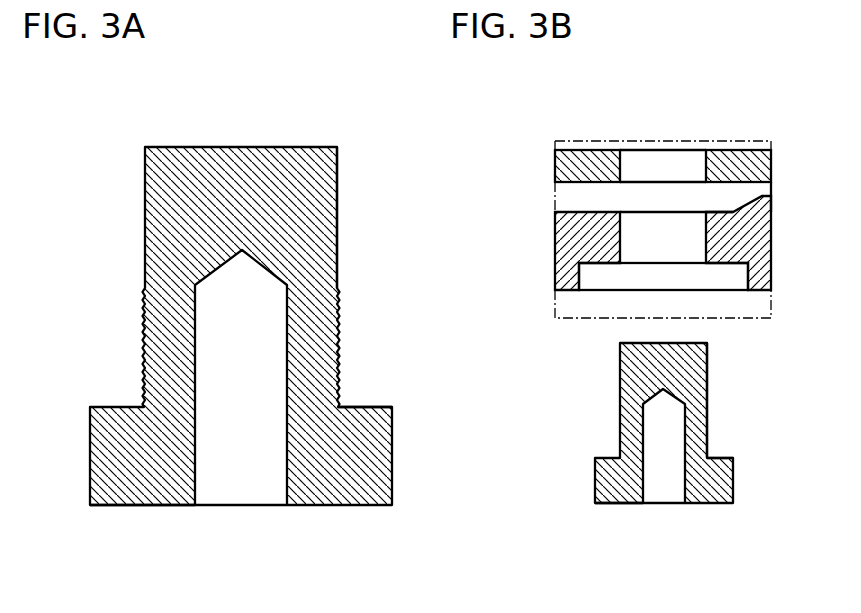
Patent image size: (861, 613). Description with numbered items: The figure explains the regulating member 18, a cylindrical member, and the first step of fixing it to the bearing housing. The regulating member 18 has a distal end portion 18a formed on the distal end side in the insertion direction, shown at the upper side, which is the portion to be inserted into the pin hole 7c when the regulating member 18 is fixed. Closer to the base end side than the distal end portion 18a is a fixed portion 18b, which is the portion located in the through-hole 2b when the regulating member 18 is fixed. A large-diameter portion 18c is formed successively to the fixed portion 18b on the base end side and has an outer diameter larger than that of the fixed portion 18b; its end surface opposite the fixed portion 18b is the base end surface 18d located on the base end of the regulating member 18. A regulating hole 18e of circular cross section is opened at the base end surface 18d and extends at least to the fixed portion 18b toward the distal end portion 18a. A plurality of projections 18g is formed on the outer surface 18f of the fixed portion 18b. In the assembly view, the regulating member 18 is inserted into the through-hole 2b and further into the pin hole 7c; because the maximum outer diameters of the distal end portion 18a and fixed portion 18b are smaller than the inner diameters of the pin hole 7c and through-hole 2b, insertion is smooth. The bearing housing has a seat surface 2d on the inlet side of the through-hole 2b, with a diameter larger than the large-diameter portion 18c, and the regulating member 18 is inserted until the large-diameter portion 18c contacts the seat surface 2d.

In FIG. 3A, the regulating member 18 is at (197, 104).
In FIG. 3B, the regulating member 18 is at (609, 388).
In FIG. 3A, the distal end portion 18a is at (338, 211).
In FIG. 3B, the distal end portion 18a is at (708, 364).
In FIG. 3A, the fixed portion 18b is at (341, 331).
In FIG. 3B, the fixed portion 18b is at (620, 428).
In FIG. 3A, the outer surface 18f is at (390, 322).
In FIG. 3B, the outer surface 18f is at (620, 428).
In FIG. 3A, the large-diameter portion 18c is at (356, 407).
In FIG. 3B, the large-diameter portion 18c is at (724, 458).
In FIG. 3A, the base end surface 18d is at (153, 505).
In FIG. 3B, the base end surface 18d is at (617, 503).
In FIG. 3A, the regulating hole 18e is at (287, 467).
In FIG. 3B, the regulating hole 18e is at (685, 462).
In FIG. 3A, the projections 18g is at (146, 337).
In FIG. 3B, the through-hole 2b is at (624, 238).
In FIG. 3B, the pin hole 7c is at (706, 168).
In FIG. 3B, the seat surface 2d is at (736, 266).